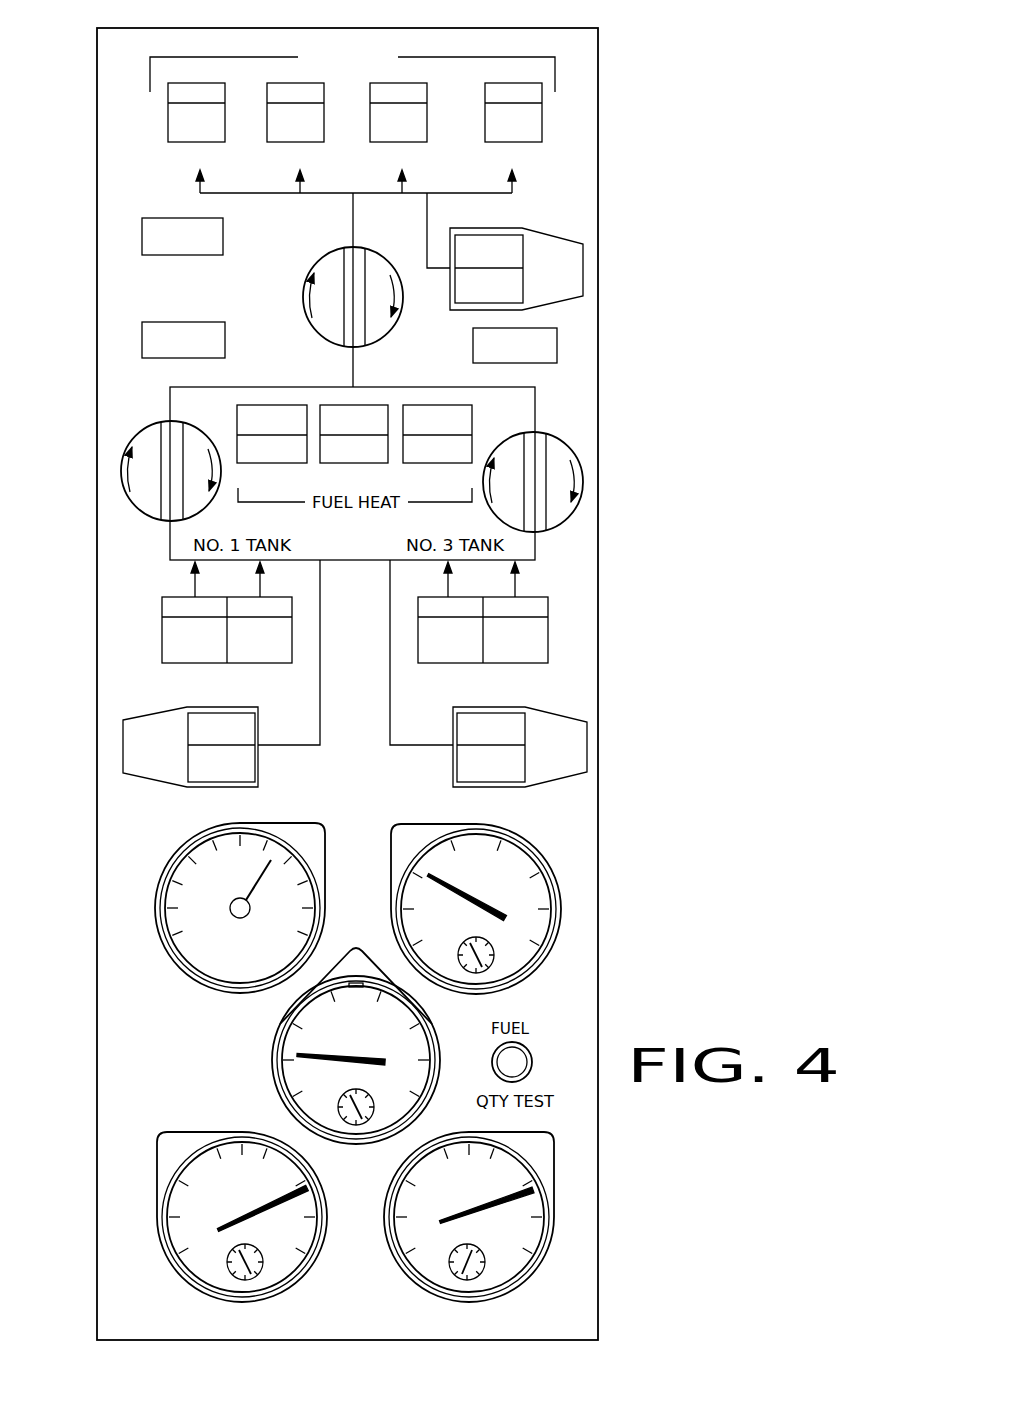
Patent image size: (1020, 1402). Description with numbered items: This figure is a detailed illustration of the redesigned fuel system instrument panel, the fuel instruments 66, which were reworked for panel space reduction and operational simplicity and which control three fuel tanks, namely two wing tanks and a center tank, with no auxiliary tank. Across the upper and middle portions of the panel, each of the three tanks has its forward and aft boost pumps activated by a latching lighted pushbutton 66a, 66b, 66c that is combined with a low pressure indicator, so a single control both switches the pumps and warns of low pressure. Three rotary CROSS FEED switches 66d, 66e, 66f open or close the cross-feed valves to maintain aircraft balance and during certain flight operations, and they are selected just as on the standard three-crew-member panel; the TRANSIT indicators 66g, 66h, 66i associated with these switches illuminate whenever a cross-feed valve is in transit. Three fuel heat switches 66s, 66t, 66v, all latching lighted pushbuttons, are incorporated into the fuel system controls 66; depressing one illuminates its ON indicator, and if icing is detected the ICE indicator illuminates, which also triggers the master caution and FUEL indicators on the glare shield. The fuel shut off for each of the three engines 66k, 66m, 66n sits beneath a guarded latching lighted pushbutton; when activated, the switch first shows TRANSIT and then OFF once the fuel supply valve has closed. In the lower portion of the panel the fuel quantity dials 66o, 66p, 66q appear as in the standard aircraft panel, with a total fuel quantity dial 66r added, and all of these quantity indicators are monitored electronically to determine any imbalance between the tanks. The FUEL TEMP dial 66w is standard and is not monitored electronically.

The fuel instruments 66 is at (602, 58).
The latching lighted pushbutton 66a is at (158, 628).
The latching lighted pushbutton 66b is at (160, 115).
The latching lighted pushbutton 66c is at (551, 635).
The cross-feed valve switch 66d is at (125, 478).
The cross-feed valve switch 66e is at (297, 293).
The cross-feed valve switch 66f is at (586, 446).
The TRANSIT indicator 66g is at (135, 353).
The TRANSIT indicator 66h is at (140, 232).
The TRANSIT indicator 66i is at (565, 345).
The engine fuel shut off 66k is at (170, 795).
The engine fuel shut off 66m is at (555, 230).
The engine fuel shut off 66n is at (559, 788).
The fuel quantity dial 66o is at (154, 1237).
The fuel quantity dial 66p is at (262, 1068).
The fuel quantity dial 66q is at (556, 1233).
The total fuel quantity dial 66r is at (566, 935).
The fuel heat switch 66s is at (238, 470).
The fuel heat switch 66t is at (402, 470).
The fuel heat switch 66v is at (478, 433).
The FUEL TEMP dial 66w is at (165, 963).